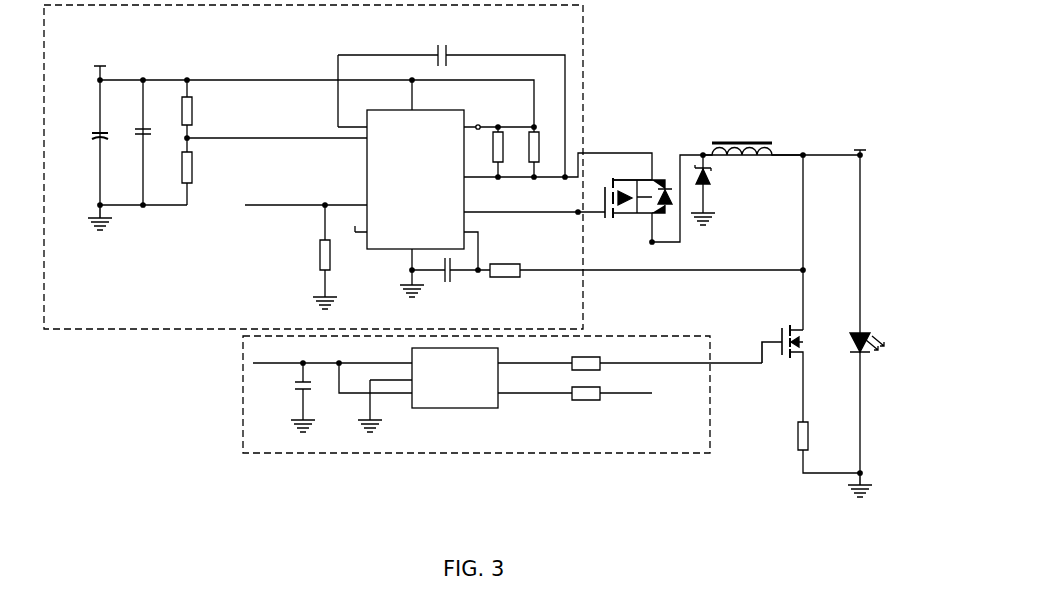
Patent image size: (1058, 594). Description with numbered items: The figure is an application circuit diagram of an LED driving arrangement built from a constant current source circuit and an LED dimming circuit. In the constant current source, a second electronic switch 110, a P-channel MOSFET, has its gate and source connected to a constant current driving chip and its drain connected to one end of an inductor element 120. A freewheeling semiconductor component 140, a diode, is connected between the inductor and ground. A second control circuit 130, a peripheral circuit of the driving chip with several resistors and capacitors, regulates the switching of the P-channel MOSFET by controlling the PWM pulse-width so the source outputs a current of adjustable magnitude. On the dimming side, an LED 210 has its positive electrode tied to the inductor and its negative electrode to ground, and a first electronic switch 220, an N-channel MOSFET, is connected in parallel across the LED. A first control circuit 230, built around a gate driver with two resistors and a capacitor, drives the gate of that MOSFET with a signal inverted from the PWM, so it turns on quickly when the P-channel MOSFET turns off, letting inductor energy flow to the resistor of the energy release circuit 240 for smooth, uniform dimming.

The second electronic switch 110 is at (622, 178).
The inductor element 120 is at (734, 143).
The second control circuit 130 is at (118, 330).
The freewheeling semiconductor component 140 is at (712, 182).
The LED 210 is at (866, 332).
The first electronic switch 220 is at (786, 351).
The first control circuit 230 is at (243, 440).
The energy release circuit 240 is at (797, 436).